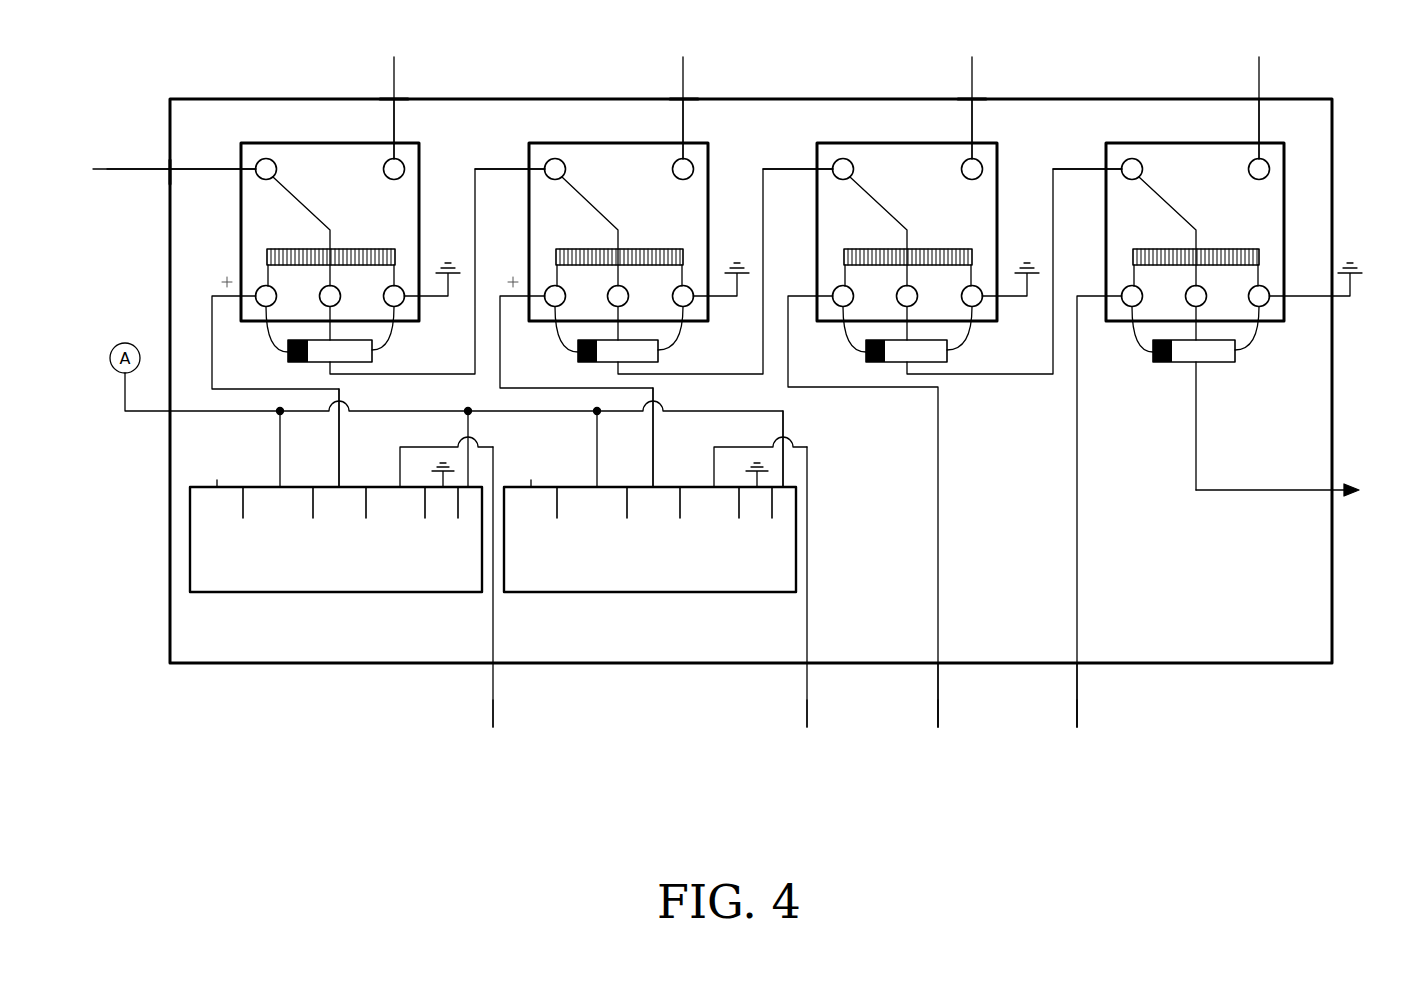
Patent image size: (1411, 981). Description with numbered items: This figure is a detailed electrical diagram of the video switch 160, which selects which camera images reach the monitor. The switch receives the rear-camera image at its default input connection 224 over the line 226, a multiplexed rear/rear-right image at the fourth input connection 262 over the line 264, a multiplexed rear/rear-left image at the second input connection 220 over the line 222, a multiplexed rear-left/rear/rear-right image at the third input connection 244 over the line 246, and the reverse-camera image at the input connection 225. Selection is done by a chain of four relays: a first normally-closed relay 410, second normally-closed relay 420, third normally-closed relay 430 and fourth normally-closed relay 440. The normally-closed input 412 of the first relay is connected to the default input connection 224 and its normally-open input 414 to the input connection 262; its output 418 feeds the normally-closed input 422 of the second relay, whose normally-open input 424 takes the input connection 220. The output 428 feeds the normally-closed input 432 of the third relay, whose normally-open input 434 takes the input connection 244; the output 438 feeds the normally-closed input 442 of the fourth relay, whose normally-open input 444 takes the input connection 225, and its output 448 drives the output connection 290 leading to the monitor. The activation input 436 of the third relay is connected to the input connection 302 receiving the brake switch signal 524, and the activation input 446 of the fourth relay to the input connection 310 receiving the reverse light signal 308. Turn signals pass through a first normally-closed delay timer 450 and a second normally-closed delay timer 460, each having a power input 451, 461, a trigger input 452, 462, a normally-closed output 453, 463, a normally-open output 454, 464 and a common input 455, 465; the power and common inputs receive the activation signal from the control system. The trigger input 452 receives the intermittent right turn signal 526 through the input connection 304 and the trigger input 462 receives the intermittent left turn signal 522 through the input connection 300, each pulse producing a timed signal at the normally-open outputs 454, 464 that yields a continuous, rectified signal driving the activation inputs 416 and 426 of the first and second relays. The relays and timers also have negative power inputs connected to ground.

The video switch 160 is at (1331, 634).
The default input connection 224 is at (170, 172).
The connection or line 226 is at (107, 172).
The fourth input connection 262 is at (398, 98).
The connection or line 264 is at (392, 73).
The second input connection 220 is at (686, 98).
The line or connection 222 is at (680, 73).
The third input connection 244 is at (975, 98).
The connection or line 246 is at (968, 73).
The input connection 225 is at (1262, 98).
The output connection 290 is at (1335, 492).
The first normally-closed relay 410 is at (320, 142).
The normally-closed input 412 is at (240, 167).
The normally-open input 414 is at (399, 140).
The activation input 416 is at (238, 297).
The output 418 is at (342, 322).
The second normally-closed relay 420 is at (610, 142).
The normally-closed input 422 is at (527, 167).
The normally-open input 424 is at (689, 140).
The activation input 426 is at (530, 297).
The output 428 is at (623, 322).
The third normally-closed relay 430 is at (898, 142).
The normally-closed input 432 is at (815, 167).
The normally-open input 434 is at (977, 140).
The activation input 436 is at (818, 297).
The output 438 is at (910, 322).
The fourth normally-closed relay 440 is at (1190, 142).
The normally-closed input 442 is at (1105, 167).
The normally-open input 444 is at (1264, 140).
The activation input 446 is at (1106, 297).
The output 448 is at (1200, 322).
The first normally-closed delay timer 450 is at (328, 593).
The power input 451 is at (465, 520).
The trigger input 452 is at (387, 487).
The normally-closed output 453 is at (223, 471).
The normally-open output 454 is at (325, 487).
The common input 455 is at (260, 487).
The second normally-closed delay timer 460 is at (652, 593).
The power input 461 is at (779, 520).
The trigger input 462 is at (701, 487).
The normally-closed output 463 is at (537, 471).
The normally-open output 464 is at (639, 487).
The common input 465 is at (574, 487).
The left turn signal input 300 is at (809, 666).
The 12 VDC input connection 302 is at (940, 666).
The right turn signal input 304 is at (497, 665).
The 12 VDC input connection 310 is at (1079, 666).
The 12 VDC left turn signal 522 is at (809, 685).
The 12 VDC brake switch signal 524 is at (940, 685).
The 12 VDC right turn signal 526 is at (497, 685).
The 12 VDC reverse light signal 308 is at (1079, 685).